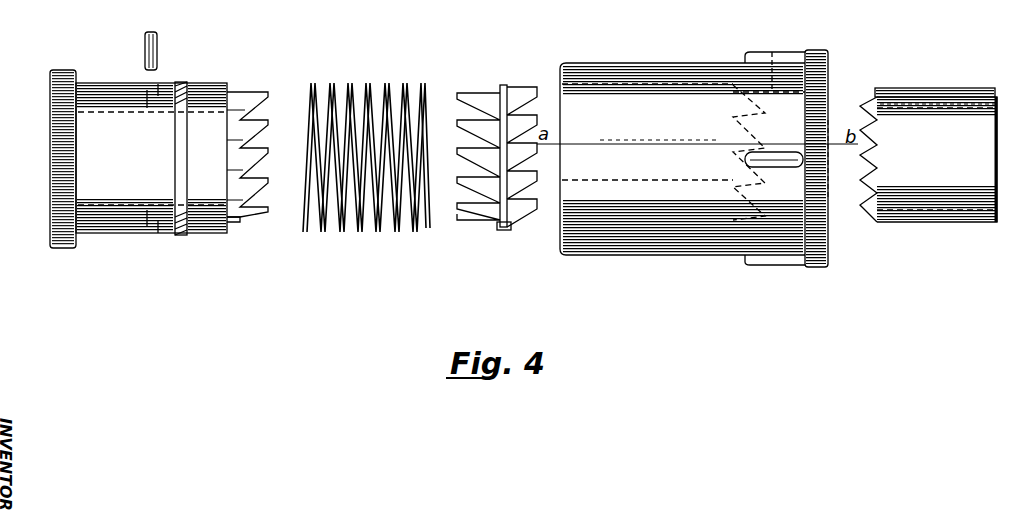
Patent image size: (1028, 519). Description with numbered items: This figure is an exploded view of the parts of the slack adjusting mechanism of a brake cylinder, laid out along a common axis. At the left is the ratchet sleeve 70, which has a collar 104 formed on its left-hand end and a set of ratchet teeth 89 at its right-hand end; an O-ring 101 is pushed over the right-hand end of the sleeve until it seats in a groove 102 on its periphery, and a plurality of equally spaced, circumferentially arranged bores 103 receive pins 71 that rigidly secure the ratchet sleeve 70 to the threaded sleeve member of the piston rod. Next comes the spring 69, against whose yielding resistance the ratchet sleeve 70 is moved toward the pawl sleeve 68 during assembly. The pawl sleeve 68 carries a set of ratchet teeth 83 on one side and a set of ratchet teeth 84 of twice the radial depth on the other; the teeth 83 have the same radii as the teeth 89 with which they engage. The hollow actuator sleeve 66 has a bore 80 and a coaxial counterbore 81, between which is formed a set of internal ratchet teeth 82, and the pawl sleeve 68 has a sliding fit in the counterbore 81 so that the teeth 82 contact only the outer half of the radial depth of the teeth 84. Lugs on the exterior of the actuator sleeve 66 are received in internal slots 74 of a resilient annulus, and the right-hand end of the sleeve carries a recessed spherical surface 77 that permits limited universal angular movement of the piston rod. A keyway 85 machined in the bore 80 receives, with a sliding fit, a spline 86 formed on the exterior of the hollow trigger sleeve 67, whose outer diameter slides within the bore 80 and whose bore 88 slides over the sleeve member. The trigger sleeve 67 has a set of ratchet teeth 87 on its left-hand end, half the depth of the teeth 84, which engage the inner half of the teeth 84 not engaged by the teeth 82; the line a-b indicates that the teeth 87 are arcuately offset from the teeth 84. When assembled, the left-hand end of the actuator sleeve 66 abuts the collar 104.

The hollow actuator sleeve 66 is at (692, 243).
The hollow trigger sleeve 67 is at (950, 200).
The pawl sleeve 68 is at (503, 230).
The spring 69 is at (352, 90).
The ratchet sleeve 70 is at (236, 219).
The pins 71 is at (158, 42).
The internal slots 74 is at (760, 52).
The recessed spherical surface 77 is at (828, 72).
The bore 80 is at (776, 259).
The counterbore 81 is at (645, 232).
The internal ratchet teeth 82 is at (733, 85).
The ratchet teeth 83 is at (480, 96).
The ratchet teeth 84 is at (518, 100).
The keyway 85 is at (772, 75).
The spline 86 is at (902, 90).
The ratchet teeth 87 is at (862, 205).
The bore 88 is at (948, 106).
The ratchet teeth 89 is at (260, 102).
The O-ring 101 is at (182, 82).
The groove 102 is at (184, 235).
The bores 103 is at (147, 86).
The collar 104 is at (52, 133).